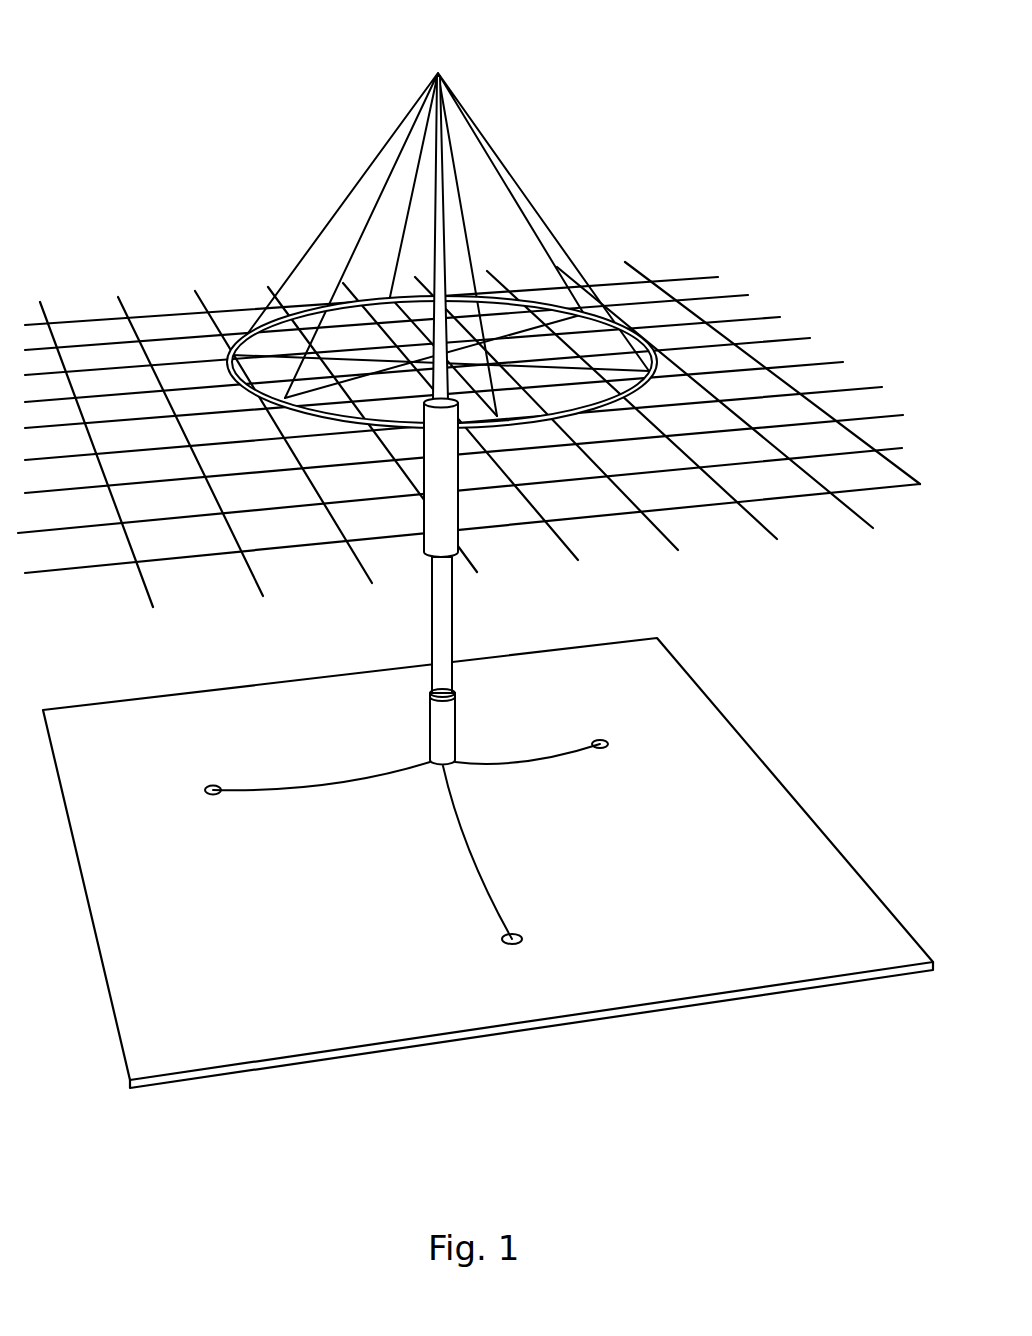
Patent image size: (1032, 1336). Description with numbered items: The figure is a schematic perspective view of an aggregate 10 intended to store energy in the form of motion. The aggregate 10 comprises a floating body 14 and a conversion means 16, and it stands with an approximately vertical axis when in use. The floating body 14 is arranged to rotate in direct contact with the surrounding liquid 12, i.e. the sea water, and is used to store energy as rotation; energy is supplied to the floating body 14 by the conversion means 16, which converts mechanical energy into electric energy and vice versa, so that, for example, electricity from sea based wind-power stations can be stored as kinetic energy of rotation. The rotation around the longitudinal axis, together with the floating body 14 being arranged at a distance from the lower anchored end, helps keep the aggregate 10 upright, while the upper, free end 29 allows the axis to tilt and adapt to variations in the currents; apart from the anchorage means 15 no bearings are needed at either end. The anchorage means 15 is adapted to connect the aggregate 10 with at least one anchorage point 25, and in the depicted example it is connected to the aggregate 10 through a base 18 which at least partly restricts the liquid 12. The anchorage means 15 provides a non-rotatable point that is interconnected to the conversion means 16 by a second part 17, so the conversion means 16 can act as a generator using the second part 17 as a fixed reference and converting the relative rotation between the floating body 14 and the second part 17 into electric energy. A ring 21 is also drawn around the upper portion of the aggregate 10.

The aggregate 10 is at (740, 68).
The surrounding liquid 12 is at (893, 376).
The floating body 14 is at (443, 622).
The anchorage means 15 is at (458, 815).
The conversion means 16 is at (442, 760).
The second part 17 is at (432, 762).
The base 18 is at (488, 863).
The ring 21 is at (230, 348).
The anchorage point 25 is at (602, 738).
The upper free end 29 is at (440, 74).